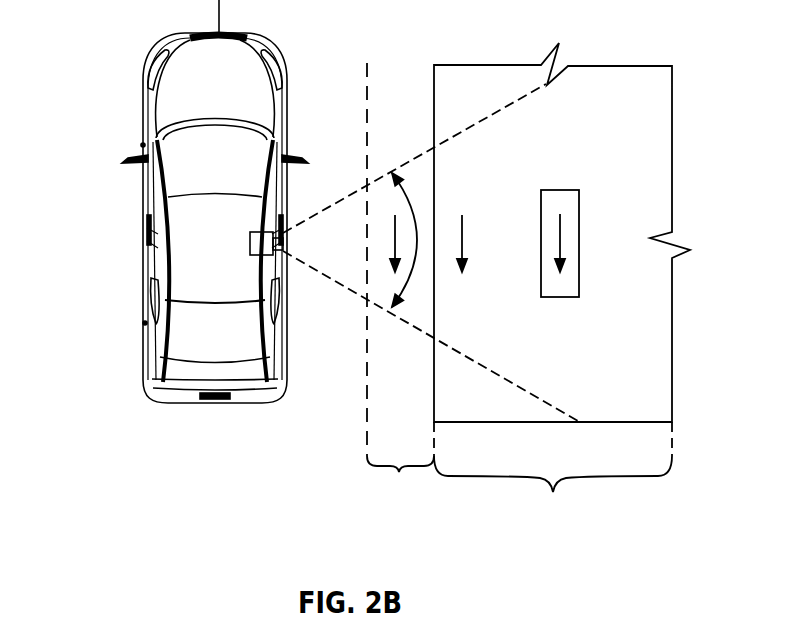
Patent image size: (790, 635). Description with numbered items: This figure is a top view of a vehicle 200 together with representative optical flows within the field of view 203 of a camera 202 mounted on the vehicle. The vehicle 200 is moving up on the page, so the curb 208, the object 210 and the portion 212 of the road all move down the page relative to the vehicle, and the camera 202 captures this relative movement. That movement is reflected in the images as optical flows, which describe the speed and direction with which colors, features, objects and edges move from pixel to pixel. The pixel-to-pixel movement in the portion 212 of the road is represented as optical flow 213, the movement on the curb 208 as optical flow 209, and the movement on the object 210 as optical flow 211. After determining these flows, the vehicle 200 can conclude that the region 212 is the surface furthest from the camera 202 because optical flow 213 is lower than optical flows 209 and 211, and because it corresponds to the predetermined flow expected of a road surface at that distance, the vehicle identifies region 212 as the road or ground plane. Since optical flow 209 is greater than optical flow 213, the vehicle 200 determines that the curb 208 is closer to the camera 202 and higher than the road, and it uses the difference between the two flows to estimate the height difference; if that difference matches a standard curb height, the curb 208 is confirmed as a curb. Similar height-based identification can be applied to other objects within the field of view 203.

The vehicle 200 is at (145, 122).
The camera 202 is at (253, 232).
The field of view 203 is at (414, 218).
The curb 208 is at (553, 494).
The optical flow 209 is at (462, 235).
The object 210 is at (561, 190).
The optical flow 211 is at (560, 238).
The portion of the road 212 is at (398, 473).
The optical flow 213 is at (395, 216).